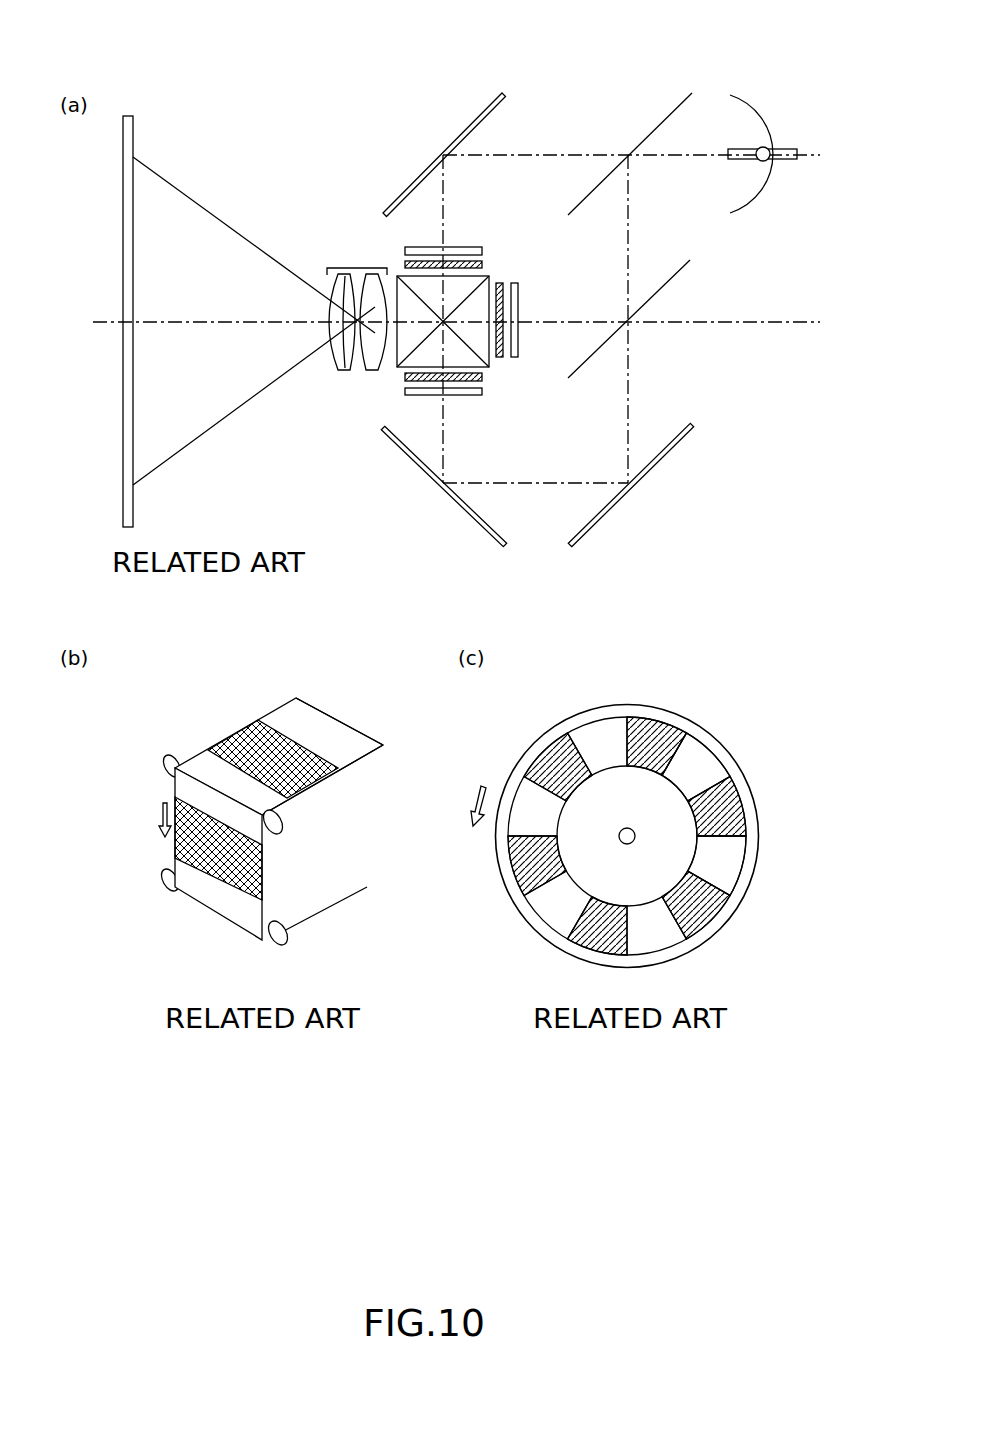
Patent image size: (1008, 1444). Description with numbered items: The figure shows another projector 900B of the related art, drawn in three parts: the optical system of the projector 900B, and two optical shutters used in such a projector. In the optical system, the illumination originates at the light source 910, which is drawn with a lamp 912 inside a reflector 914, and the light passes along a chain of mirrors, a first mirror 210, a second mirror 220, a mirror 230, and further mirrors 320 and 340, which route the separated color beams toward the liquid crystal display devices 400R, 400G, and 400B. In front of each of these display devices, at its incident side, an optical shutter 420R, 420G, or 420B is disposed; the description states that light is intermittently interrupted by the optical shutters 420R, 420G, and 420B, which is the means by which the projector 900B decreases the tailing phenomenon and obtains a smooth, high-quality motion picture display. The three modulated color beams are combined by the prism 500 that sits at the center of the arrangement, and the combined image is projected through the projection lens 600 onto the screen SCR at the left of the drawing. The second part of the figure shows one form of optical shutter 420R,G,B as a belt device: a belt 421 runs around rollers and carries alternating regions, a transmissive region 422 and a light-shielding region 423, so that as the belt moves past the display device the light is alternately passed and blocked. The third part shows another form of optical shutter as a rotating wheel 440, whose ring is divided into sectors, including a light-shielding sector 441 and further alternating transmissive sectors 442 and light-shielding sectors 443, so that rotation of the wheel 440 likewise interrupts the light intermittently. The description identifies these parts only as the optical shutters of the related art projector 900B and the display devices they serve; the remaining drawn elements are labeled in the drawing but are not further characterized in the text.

The projector 900B is at (732, 23).
The screen SCR is at (135, 463).
The projection lens 600 is at (350, 266).
The cross dichroic prism 500 is at (400, 355).
The optical shutter 420R is at (422, 248).
The liquid crystal display device 400R is at (470, 262).
The liquid crystal display device 400G is at (500, 285).
The optical shutter 420G is at (520, 345).
The liquid crystal display device 400B is at (400, 378).
The optical shutter 420B is at (405, 392).
The reflecting mirror 230 is at (470, 118).
The dichroic mirror 210 is at (645, 135).
The dichroic mirror 220 is at (660, 283).
The reflecting mirror 340 is at (477, 528).
The reflecting mirror 320 is at (672, 448).
The light source 910 is at (776, 148).
The lamp 912 is at (770, 147).
The reflector 914 is at (760, 206).
The optical shutters 420R,G,B is at (263, 807).
The belt 421 is at (355, 762).
The transmissive area 422 is at (190, 788).
The light shielding area 423 is at (178, 842).
The filter wheel 440 is at (651, 820).
The light shielding area 441 is at (540, 743).
The transmissive area 442 is at (715, 765).
The light shielding area 443 is at (745, 808).